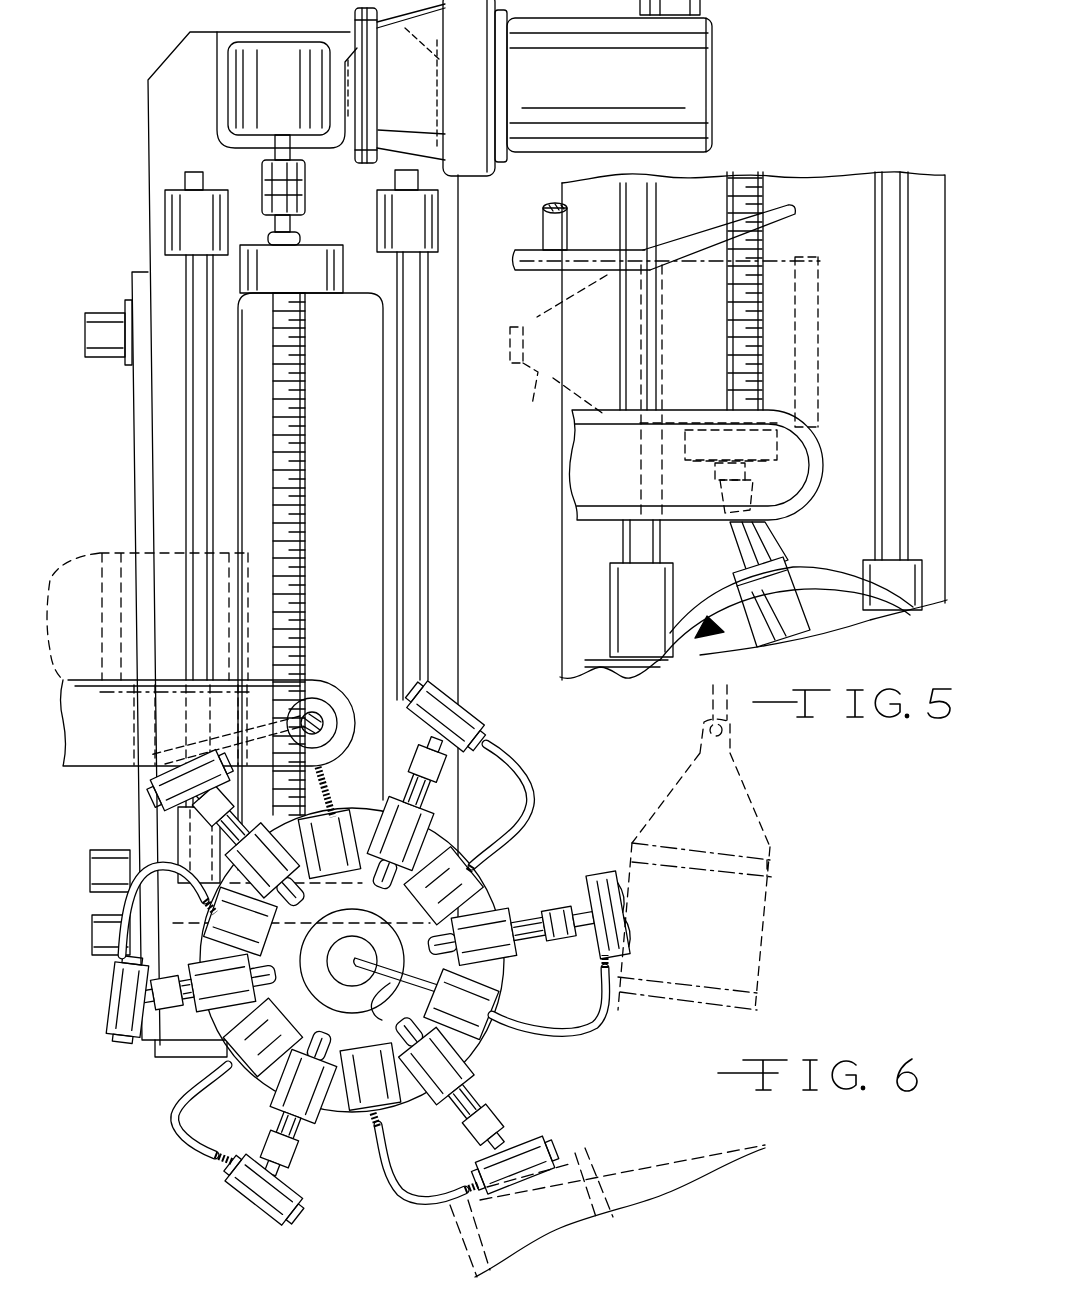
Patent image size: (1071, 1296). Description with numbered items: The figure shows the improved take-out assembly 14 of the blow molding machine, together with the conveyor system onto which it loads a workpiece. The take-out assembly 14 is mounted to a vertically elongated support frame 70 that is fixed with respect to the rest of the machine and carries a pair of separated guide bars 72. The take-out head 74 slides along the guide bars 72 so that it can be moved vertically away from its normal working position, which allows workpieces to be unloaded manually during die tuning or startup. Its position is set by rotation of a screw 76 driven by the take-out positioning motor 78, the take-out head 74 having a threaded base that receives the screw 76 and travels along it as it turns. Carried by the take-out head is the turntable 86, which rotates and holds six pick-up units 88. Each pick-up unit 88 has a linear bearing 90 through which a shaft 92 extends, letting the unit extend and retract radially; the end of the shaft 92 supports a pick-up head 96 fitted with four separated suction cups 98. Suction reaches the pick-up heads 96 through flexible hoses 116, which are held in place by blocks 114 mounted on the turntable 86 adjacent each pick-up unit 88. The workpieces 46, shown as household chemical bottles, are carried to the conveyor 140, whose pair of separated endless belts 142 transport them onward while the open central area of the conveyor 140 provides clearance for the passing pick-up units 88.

In FIG. 6, the take-out assembly 14 is at (291, 544).
In FIG. 6, the workpieces 46 is at (770, 847).
In FIG. 5, the workpieces 46 is at (650, 385).
In FIG. 6, the support frame 70 is at (447, 527).
In FIG. 5, the guide bars 72 is at (872, 263).
In FIG. 6, the take-out head 74 is at (225, 1050).
In FIG. 6, the screw 76 is at (310, 490).
In FIG. 5, the screw 76 is at (762, 197).
In FIG. 6, the take-out positioning motor 78 is at (620, 95).
In FIG. 6, the turntable 86 is at (480, 873).
In FIG. 5, the turntable 86 is at (830, 567).
In FIG. 6, the pick-up units 88 is at (442, 768).
In FIG. 6, the linear bearing 90 is at (490, 910).
In FIG. 6, the shaft 92 is at (480, 1093).
In FIG. 6, the pick-up head 96 is at (612, 877).
In FIG. 6, the suction cups 98 is at (227, 1188).
In FIG. 6, the blocks 114 is at (347, 1100).
In FIG. 6, the flexible hoses 116 is at (380, 1003).
In FIG. 5, the conveyor 140 is at (598, 530).
In FIG. 5, the endless belts 142 is at (577, 491).